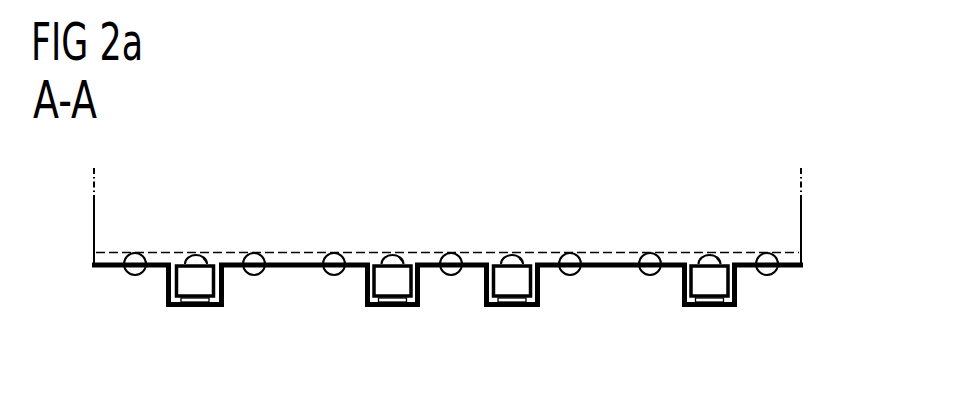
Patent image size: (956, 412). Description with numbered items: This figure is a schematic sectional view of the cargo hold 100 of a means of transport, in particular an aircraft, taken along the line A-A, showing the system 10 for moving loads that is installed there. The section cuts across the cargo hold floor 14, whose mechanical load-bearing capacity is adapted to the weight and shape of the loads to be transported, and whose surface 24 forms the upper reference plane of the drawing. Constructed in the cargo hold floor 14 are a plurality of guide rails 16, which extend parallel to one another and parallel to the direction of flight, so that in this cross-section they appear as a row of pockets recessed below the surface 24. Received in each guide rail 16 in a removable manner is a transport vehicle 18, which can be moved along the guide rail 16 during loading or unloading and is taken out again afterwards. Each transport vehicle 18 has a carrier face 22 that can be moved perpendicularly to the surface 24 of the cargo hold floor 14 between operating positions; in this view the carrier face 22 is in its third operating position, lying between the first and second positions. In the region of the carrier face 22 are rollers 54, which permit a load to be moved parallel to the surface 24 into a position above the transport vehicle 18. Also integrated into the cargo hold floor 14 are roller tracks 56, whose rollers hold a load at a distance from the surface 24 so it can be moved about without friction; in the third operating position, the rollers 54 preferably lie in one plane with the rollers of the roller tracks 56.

The cargo hold 100 is at (818, 194).
The system for moving loads 10 is at (103, 221).
The cargo hold floor 14 is at (790, 268).
The surface of the cargo hold floor 24 is at (100, 268).
The guide rail 16 is at (224, 286).
The transport vehicle 18 is at (196, 283).
The carrier face 22 is at (206, 262).
The rollers 54 is at (196, 257).
The roller tracks 56 is at (137, 276).